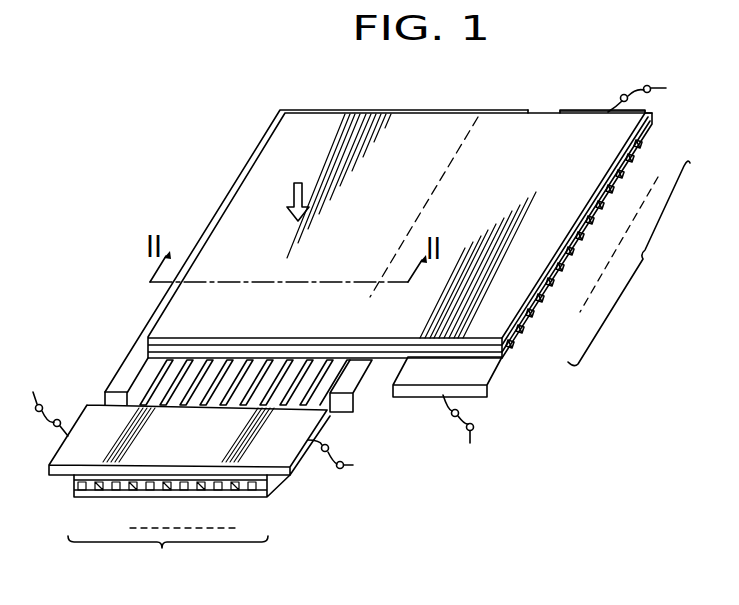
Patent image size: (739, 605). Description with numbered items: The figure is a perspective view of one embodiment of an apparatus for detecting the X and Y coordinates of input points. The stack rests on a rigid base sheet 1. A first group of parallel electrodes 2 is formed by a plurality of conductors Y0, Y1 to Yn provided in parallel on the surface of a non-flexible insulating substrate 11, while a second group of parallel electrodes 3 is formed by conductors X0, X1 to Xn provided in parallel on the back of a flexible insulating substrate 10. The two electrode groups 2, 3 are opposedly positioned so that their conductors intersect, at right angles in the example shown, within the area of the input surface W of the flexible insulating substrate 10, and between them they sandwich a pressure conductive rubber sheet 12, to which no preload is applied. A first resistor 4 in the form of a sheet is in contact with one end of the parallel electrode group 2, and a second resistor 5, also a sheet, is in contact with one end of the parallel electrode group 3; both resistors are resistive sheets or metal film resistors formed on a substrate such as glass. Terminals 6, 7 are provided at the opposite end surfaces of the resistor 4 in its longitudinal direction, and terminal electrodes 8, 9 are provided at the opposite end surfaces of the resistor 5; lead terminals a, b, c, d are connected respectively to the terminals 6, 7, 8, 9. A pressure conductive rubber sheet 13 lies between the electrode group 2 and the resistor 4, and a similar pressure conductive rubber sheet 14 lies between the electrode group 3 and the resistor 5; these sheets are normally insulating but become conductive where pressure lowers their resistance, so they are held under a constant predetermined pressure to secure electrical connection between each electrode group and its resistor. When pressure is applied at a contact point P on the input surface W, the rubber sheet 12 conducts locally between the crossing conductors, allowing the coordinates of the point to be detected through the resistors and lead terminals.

The rigid base sheet 1 is at (268, 127).
The first group of parallel electrodes 2 is at (170, 586).
The second group of parallel electrodes 3 is at (667, 273).
The first resistor 4 is at (108, 432).
The second resistor 5 is at (513, 352).
The terminal 6 is at (67, 458).
The terminal 7 is at (285, 461).
The terminal electrode 8 is at (431, 382).
The terminal electrode 9 is at (581, 110).
The flexible insulating substrate 10 is at (512, 122).
The non-flexible insulating substrate 11 is at (261, 497).
The pressure conductive rubber sheet 12 is at (366, 372).
The pressure conductive rubber sheet 13 is at (180, 478).
The pressure conductive rubber sheet 14 is at (479, 360).
The input surface W is at (336, 122).
The contact point P is at (294, 199).
The lead terminal a is at (47, 399).
The lead terminal b is at (336, 460).
The lead terminal c is at (460, 432).
The lead terminal d is at (642, 90).
The conductor X0 is at (513, 343).
The conductor X1 is at (519, 322).
The conductor Xn is at (634, 140).
The conductor Y0 is at (82, 491).
The conductor Y1 is at (100, 491).
The conductor Yn is at (255, 491).